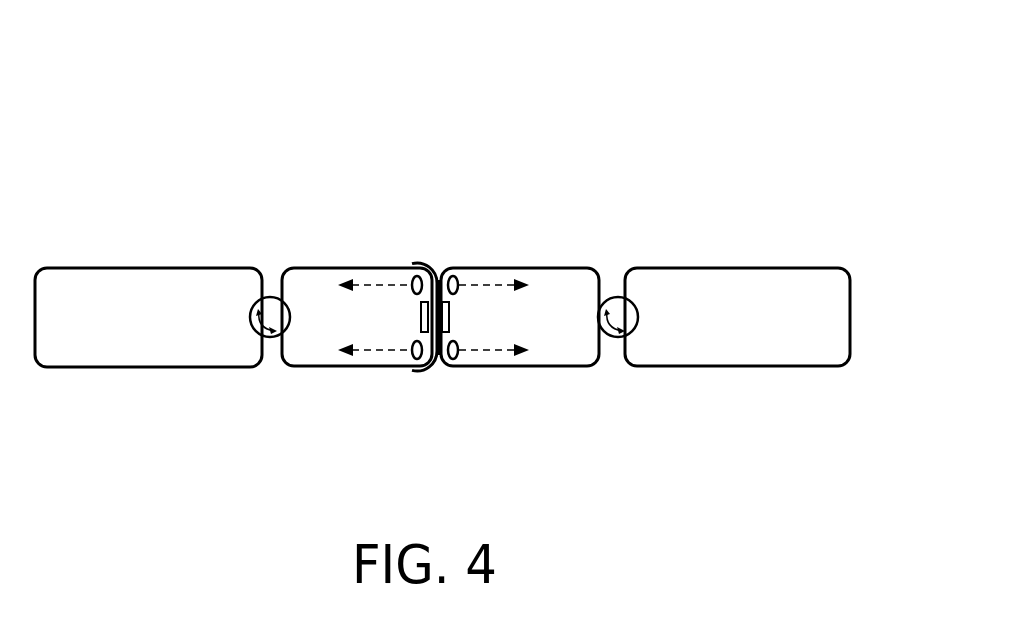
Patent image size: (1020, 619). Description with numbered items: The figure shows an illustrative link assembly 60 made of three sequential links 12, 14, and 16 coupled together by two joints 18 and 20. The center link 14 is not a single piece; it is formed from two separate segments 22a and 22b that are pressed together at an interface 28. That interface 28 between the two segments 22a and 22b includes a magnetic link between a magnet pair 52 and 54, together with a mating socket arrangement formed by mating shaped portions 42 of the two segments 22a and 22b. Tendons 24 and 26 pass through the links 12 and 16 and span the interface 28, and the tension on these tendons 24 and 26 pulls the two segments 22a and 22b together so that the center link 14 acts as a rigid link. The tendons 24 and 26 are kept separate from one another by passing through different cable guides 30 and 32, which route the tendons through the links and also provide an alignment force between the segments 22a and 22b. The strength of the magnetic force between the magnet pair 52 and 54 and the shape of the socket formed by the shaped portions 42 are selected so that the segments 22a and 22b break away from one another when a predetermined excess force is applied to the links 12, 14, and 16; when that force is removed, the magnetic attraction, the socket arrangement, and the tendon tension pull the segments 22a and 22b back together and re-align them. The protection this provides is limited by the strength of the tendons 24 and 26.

The link 12 is at (110, 305).
The center link 14 is at (310, 330).
The link 16 is at (720, 300).
The joint 18 is at (620, 338).
The joint 20 is at (272, 338).
The segment 22a is at (332, 266).
The segment 22b is at (550, 266).
The tendon 24 is at (462, 284).
The tendon 26 is at (452, 304).
The interface 28 is at (437, 272).
The cable guide 30 is at (458, 276).
The cable guide 32 is at (410, 293).
The mating shaped portions 42 is at (420, 262).
The magnet 52 is at (449, 333).
The magnet 54 is at (418, 333).
The link assembly 60 is at (661, 91).